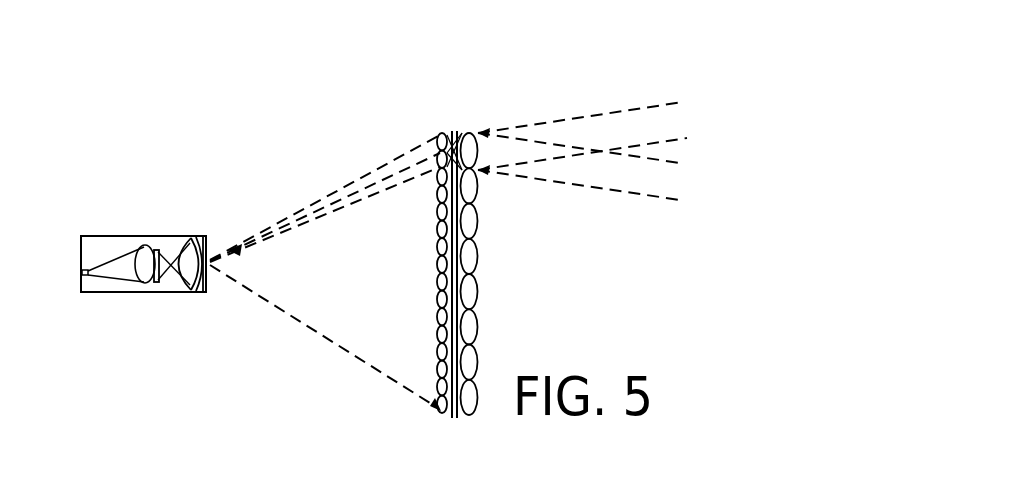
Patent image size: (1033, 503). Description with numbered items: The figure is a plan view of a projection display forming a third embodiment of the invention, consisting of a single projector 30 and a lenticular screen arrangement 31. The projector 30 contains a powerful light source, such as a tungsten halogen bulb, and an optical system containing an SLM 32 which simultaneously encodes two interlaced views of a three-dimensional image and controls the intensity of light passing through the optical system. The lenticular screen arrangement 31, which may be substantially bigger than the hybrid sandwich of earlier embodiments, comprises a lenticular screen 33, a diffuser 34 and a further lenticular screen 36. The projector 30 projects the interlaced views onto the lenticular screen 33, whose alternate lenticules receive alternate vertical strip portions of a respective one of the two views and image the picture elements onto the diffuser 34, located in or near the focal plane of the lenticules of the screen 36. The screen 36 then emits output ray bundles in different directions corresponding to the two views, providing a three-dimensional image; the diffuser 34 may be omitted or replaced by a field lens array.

The projector 30 is at (110, 235).
The lenticular screen arrangement 31 is at (456, 238).
The SLM 32 is at (157, 284).
The lenticular screen 33 is at (440, 133).
The diffuser 34 is at (456, 420).
The lenticular screen 36 is at (470, 133).